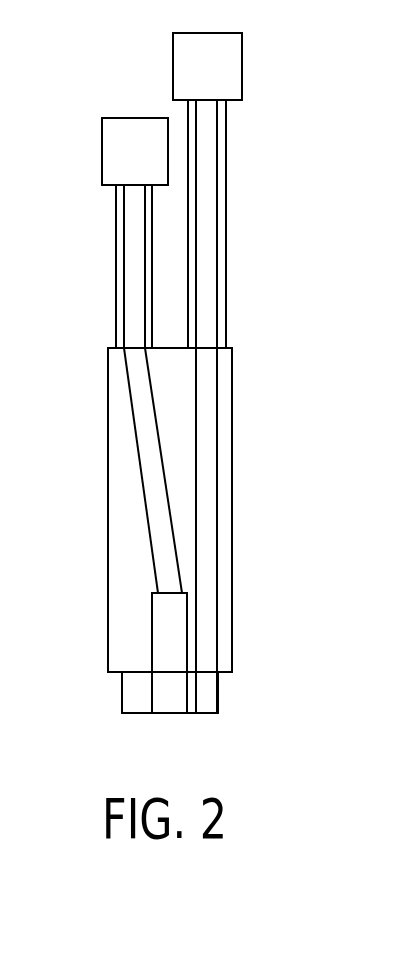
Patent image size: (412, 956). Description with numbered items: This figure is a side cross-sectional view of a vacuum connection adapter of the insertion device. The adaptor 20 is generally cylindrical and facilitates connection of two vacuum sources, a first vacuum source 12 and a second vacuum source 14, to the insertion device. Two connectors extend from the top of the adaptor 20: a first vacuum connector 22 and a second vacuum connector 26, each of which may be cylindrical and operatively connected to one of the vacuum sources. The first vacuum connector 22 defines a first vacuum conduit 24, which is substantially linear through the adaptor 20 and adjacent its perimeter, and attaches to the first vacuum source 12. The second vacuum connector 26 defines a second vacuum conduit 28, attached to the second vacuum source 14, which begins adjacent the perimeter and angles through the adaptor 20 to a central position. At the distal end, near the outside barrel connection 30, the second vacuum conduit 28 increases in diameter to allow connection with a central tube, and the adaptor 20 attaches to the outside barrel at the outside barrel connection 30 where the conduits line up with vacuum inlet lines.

The first vacuum source 12 is at (223, 55).
The second vacuum source 14 is at (123, 147).
The adaptor 20 is at (232, 453).
The first vacuum connector 22 is at (228, 170).
The first vacuum conduit 24 is at (197, 262).
The second vacuum connector 26 is at (122, 228).
The second vacuum conduit 28 is at (135, 280).
The outside barrel connection 30 is at (208, 690).